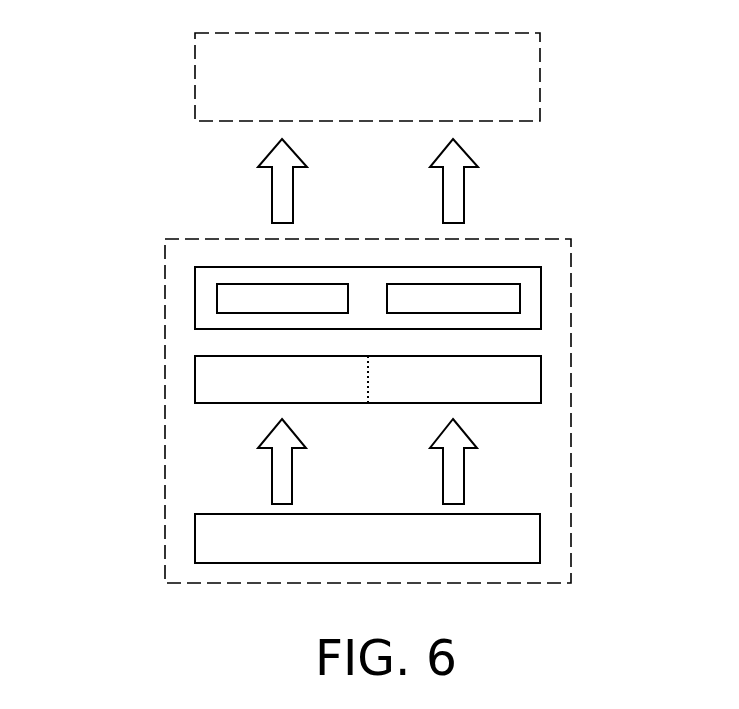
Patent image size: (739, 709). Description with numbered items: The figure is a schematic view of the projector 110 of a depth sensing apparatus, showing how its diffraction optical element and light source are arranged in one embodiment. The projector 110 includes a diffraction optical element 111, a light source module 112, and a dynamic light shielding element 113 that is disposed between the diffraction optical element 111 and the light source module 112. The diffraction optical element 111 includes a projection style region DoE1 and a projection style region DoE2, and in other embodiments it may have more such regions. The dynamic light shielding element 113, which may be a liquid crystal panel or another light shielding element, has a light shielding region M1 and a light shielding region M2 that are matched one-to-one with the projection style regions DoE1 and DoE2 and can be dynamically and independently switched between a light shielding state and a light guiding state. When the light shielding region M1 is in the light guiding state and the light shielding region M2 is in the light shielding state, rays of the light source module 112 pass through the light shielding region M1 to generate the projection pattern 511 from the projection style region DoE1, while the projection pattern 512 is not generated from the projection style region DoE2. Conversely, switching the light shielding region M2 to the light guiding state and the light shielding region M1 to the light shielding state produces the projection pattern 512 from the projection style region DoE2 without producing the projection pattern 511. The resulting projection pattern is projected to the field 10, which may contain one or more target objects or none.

The field 10 is at (541, 53).
The projection pattern 511 is at (293, 195).
The projection pattern 512 is at (464, 195).
The projector 110 is at (571, 445).
The diffraction optical element 111 is at (541, 281).
The projection style region DoE1 is at (215, 298).
The projection style region DoE2 is at (520, 303).
The dynamic light shielding element 113 is at (541, 380).
The light shielding region M1 is at (240, 390).
The light shielding region M2 is at (503, 392).
The light source module 112 is at (540, 547).